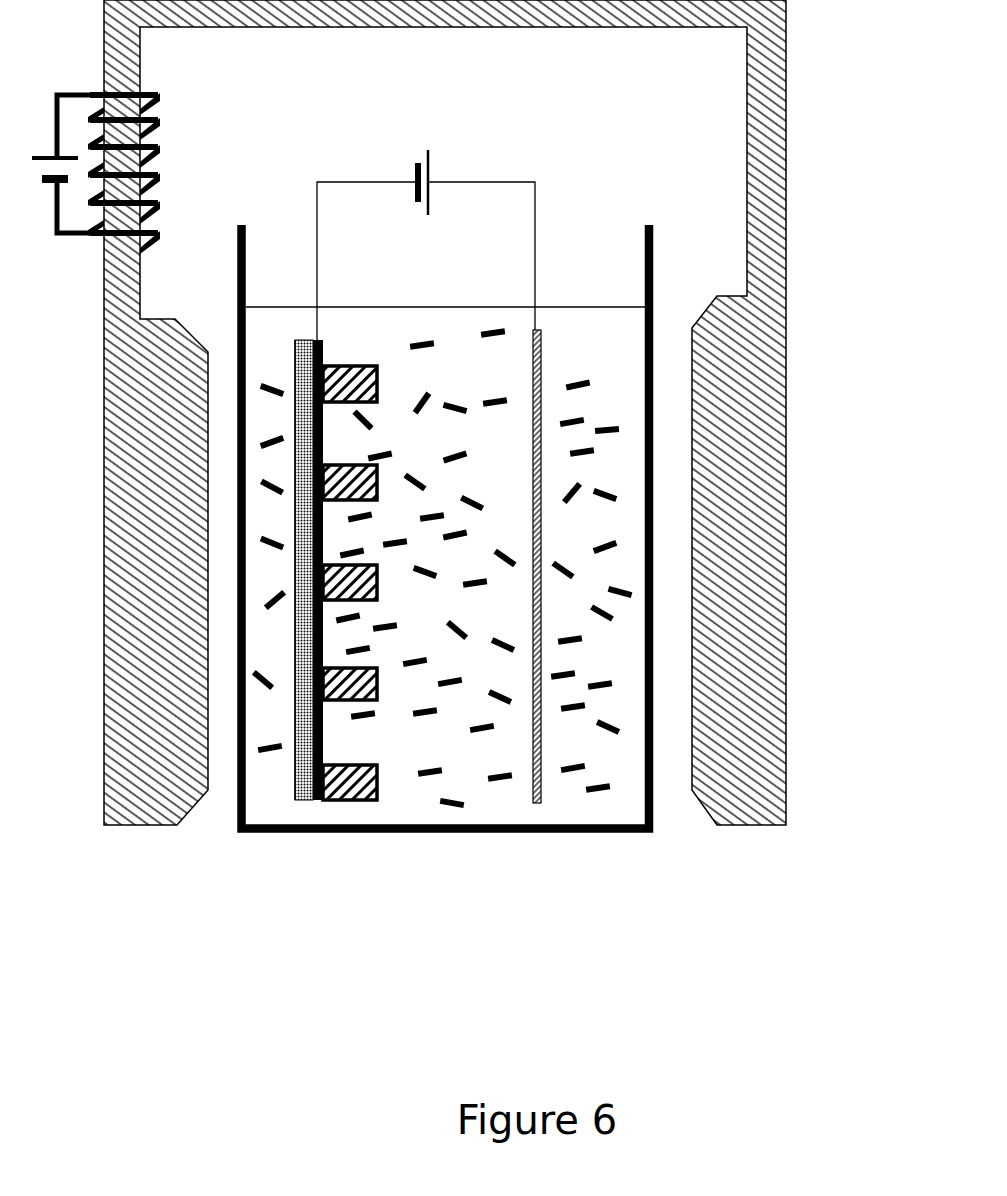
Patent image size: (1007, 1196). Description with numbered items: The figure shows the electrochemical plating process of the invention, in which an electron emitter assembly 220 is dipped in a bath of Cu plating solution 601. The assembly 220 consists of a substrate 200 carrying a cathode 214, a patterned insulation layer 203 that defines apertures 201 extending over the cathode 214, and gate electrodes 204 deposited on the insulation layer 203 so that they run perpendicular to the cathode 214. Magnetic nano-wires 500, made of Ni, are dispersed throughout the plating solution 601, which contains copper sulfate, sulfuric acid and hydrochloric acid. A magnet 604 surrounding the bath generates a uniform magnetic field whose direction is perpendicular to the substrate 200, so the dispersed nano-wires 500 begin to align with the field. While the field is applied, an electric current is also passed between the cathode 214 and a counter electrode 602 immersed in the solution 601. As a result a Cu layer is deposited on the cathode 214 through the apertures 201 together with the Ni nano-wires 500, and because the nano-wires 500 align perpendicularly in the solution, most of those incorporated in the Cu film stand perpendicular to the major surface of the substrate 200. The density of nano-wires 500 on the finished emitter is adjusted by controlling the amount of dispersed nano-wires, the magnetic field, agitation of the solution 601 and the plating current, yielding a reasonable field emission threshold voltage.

The substrate 200 is at (308, 730).
The apertures 201 is at (372, 730).
The insulation layer 203 is at (322, 800).
The gate electrode 204 is at (378, 800).
The cathode 214 is at (299, 765).
The electron emitter assembly 220 is at (311, 709).
The magnetic nano-wires 500 is at (593, 788).
The Cu plating solution 601 is at (625, 770).
The counter electrode 602 is at (545, 345).
The magnet 604 is at (773, 582).